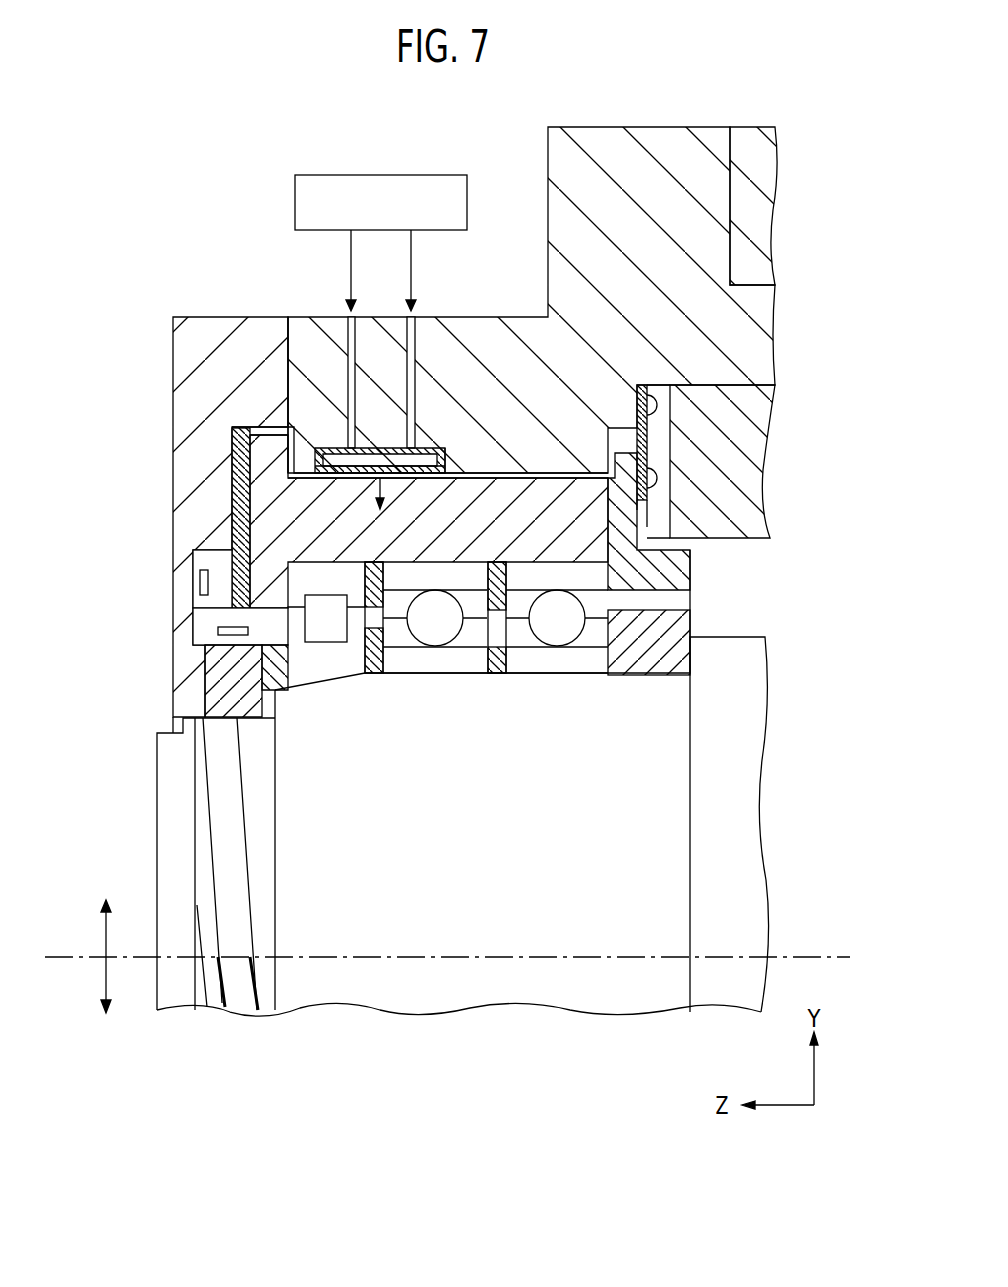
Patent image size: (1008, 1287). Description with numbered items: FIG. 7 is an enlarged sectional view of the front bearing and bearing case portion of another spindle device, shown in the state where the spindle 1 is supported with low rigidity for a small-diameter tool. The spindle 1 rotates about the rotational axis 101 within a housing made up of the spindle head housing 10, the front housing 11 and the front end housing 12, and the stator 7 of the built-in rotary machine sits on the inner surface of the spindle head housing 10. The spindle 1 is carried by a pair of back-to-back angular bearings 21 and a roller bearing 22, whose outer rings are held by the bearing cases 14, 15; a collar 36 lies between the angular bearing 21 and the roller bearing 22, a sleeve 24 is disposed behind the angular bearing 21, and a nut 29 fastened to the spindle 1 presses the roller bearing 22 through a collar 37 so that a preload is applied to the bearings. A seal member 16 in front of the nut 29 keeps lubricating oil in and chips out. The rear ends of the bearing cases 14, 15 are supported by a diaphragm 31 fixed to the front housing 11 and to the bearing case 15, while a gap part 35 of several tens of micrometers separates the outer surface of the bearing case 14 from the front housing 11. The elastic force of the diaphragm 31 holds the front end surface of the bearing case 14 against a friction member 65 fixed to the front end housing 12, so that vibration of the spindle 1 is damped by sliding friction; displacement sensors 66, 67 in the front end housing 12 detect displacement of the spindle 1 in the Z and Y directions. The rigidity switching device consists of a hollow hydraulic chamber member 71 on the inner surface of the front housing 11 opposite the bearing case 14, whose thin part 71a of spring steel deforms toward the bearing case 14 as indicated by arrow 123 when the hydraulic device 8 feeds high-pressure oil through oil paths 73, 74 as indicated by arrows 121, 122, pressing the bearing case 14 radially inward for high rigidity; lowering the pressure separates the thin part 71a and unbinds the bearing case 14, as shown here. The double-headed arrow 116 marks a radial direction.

The spindle 1 is at (740, 818).
The stator 7 is at (727, 493).
The hydraulic device 8 is at (294, 205).
The spindle head housing 10 is at (776, 150).
The front housing 11 is at (664, 131).
The front end housing 12 is at (186, 345).
The bearing case 14 is at (610, 518).
The bearing case 15 is at (660, 568).
The seal member 16 is at (270, 686).
The angular bearing 21 is at (440, 673).
The roller bearing 22 is at (325, 680).
The sleeve 24 is at (660, 650).
The nut 29 is at (227, 697).
The diaphragm 31 is at (650, 430).
The gap part 35 is at (568, 477).
The collar 36 is at (375, 673).
The collar 37 is at (220, 666).
The friction member 65 is at (240, 533).
The displacement sensor 66 is at (200, 583).
The displacement sensor 67 is at (230, 630).
The hydraulic chamber member 71 is at (330, 447).
The thin part 71a is at (313, 485).
The oil path 73 is at (416, 380).
The oil path 74 is at (336, 372).
The rotational axis 101 is at (835, 957).
The radial direction 116 is at (105, 937).
The arrow 121 is at (412, 260).
The arrow 122 is at (351, 283).
The arrow 123 is at (370, 503).